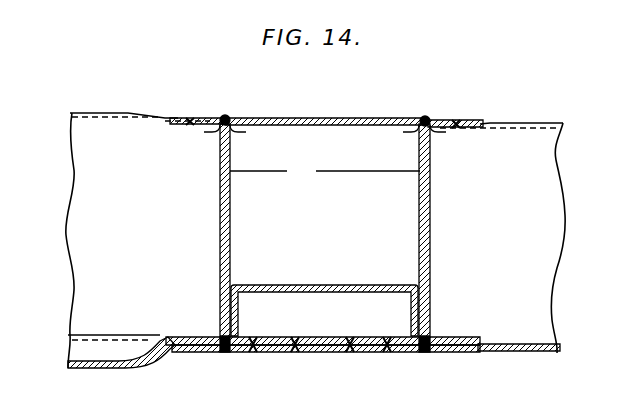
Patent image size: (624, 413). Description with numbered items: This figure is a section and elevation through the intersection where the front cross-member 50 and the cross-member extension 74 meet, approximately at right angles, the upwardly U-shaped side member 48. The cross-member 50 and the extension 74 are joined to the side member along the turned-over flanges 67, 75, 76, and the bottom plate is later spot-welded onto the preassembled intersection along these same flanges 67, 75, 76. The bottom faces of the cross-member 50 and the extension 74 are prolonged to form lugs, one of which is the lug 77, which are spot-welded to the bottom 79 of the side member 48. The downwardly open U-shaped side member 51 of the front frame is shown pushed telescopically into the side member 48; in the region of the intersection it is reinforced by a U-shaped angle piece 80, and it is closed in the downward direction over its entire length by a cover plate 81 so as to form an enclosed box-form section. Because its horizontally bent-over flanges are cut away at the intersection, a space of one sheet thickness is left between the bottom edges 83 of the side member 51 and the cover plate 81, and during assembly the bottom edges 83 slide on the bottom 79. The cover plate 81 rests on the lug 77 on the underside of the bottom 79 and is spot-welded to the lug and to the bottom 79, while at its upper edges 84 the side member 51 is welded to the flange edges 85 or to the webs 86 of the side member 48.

The cross-member extension 74 is at (105, 169).
The turned-over flange 75 is at (108, 113).
The turned-over flange 76 is at (172, 118).
The side member of the front frame 51 is at (375, 118).
The side member 48 is at (230, 218).
The upper edge 84 is at (234, 118).
The flange edge 85 is at (226, 117).
The turned-over flange 67 is at (505, 124).
The front cross-member 50 is at (500, 186).
The web 86 is at (325, 172).
The U-shaped angle piece 80 is at (318, 286).
The bottom of the side member 79 is at (296, 338).
The cover plate 81 is at (310, 351).
The lug 77 is at (383, 347).
The bottom edge 83 is at (225, 340).